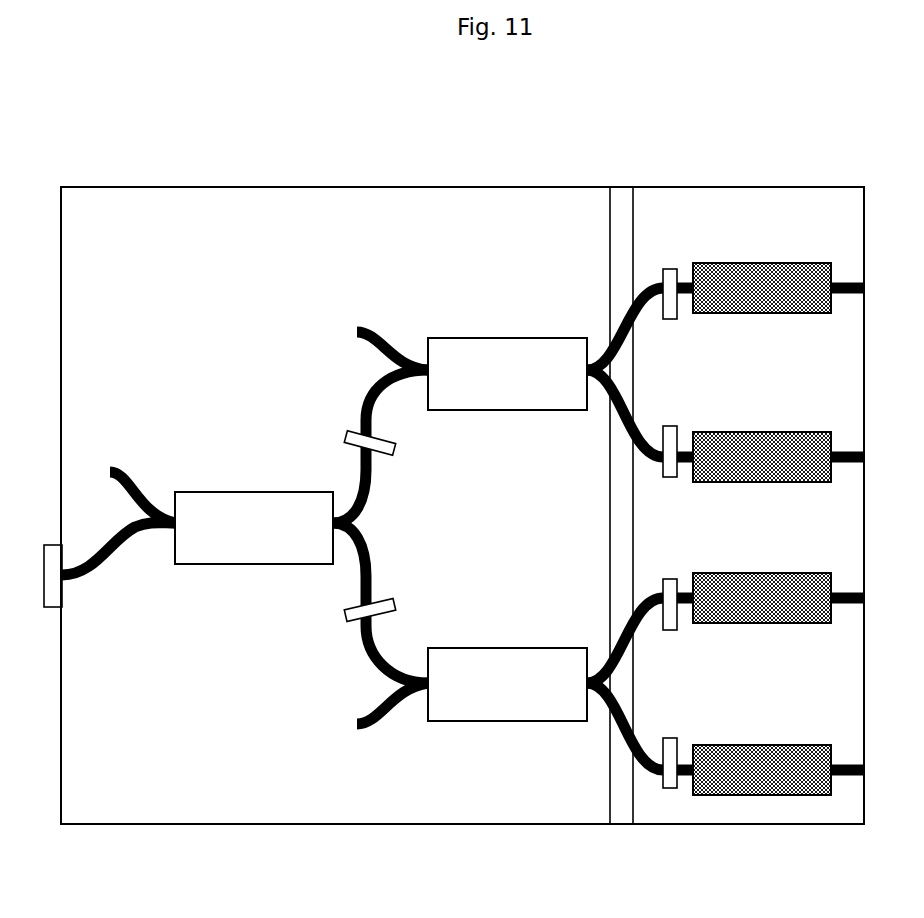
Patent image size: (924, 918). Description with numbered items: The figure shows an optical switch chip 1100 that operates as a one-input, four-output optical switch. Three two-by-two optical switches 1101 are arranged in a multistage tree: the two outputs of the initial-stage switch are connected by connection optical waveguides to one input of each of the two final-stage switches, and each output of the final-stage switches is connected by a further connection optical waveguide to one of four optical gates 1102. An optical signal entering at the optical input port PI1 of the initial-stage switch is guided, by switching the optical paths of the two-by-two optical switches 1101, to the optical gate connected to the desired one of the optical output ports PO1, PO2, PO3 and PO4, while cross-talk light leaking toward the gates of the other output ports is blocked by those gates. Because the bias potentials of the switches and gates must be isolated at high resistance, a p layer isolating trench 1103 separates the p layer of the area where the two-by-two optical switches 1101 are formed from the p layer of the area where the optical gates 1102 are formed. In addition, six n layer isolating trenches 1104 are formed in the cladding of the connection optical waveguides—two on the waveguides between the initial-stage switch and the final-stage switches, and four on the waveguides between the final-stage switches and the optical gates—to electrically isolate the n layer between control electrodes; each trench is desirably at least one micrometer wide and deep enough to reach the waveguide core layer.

The optical switch chip 1100 is at (181, 180).
The 2×2 optical switch 1101 is at (251, 492).
The optical gate 1102 is at (764, 263).
The p layer isolating trench 1103 is at (610, 212).
The n layer isolating trench 1104 is at (396, 453).
The optical input port PI1 is at (95, 581).
The optical output port PO1 is at (852, 296).
The optical output port PO2 is at (852, 465).
The optical output port PO3 is at (852, 606).
The optical output port PO4 is at (852, 778).